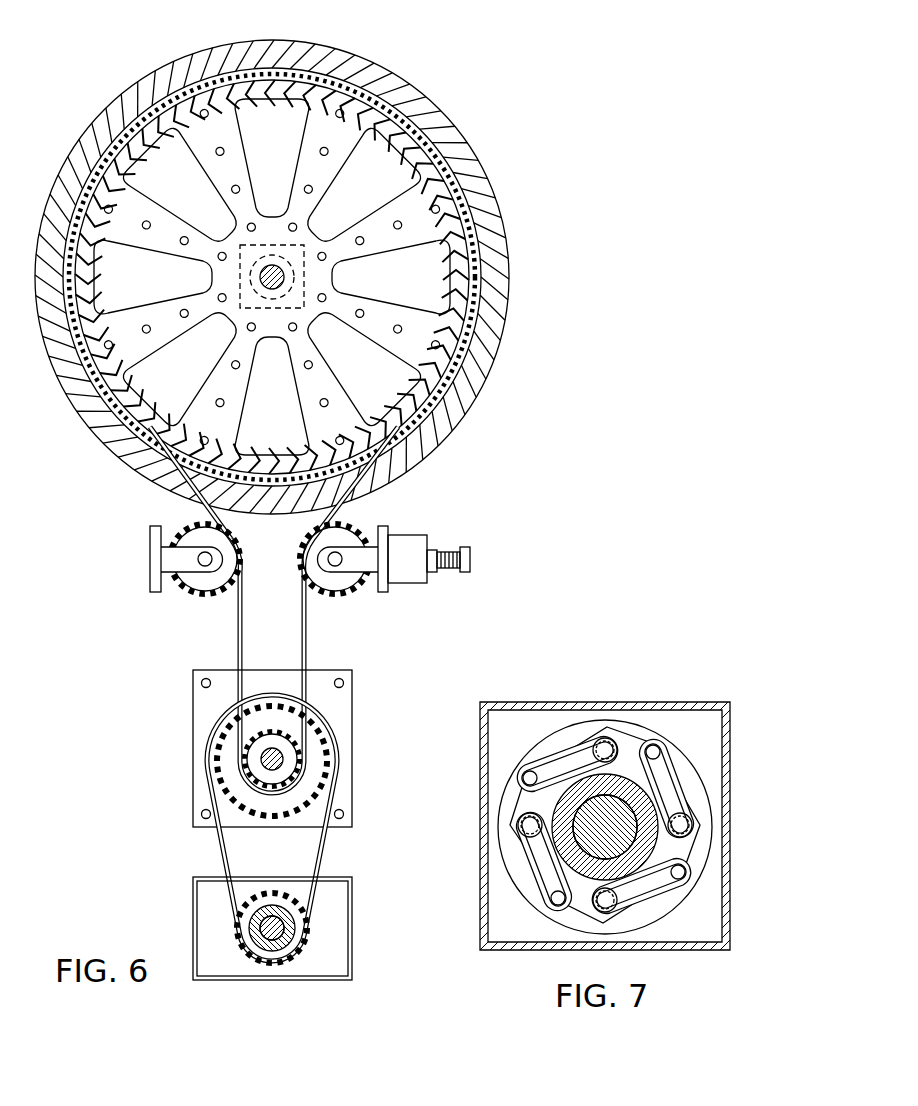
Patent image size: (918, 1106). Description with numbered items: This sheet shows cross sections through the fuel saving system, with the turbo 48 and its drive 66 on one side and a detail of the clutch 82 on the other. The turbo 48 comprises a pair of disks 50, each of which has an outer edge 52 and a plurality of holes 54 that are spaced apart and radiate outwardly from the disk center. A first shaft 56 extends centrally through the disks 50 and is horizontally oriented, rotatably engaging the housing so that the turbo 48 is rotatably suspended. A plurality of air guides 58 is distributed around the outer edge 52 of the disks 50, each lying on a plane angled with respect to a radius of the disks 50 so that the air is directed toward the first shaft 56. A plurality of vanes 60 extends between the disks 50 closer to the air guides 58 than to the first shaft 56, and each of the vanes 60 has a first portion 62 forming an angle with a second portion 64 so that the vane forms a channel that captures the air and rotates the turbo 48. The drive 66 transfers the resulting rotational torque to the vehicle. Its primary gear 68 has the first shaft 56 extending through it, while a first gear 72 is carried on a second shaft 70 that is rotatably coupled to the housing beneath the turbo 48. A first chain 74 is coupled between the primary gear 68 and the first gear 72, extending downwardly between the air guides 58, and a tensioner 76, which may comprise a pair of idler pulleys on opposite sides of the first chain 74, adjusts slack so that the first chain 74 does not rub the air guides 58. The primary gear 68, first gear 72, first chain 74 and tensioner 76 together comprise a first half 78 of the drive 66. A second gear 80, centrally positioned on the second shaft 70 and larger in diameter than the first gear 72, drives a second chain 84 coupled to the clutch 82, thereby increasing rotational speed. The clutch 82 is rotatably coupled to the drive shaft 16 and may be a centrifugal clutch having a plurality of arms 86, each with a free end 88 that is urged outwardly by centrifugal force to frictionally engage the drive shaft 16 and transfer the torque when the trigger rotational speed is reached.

In FIG. 7, the drive shaft 16 is at (650, 797).
In FIG. 6, the turbo 48 is at (116, 70).
In FIG. 6, the disks 50 is at (220, 113).
In FIG. 6, the outer edge 52 is at (358, 158).
In FIG. 6, the holes 54 is at (497, 197).
In FIG. 6, the first shaft 56 is at (271, 265).
In FIG. 6, the air guides 58 is at (453, 115).
In FIG. 6, the vanes 60 is at (407, 133).
In FIG. 6, the first portion 62 is at (468, 340).
In FIG. 6, the second portion 64 is at (445, 338).
In FIG. 6, the drive 66 is at (180, 678).
In FIG. 6, the primary gear 68 is at (183, 455).
In FIG. 6, the second shaft 70 is at (262, 758).
In FIG. 6, the first gear 72 is at (275, 725).
In FIG. 6, the first chain 74 is at (237, 623).
In FIG. 6, the tensioner 76 is at (158, 548).
In FIG. 6, the first half 78 is at (357, 512).
In FIG. 6, the second gear 80 is at (268, 820).
In FIG. 6, the clutch 82 is at (248, 936).
In FIG. 7, the clutch 82 is at (630, 777).
In FIG. 6, the second chain 84 is at (233, 892).
In FIG. 7, the arms 86 is at (562, 763).
In FIG. 7, the free end 88 is at (652, 750).